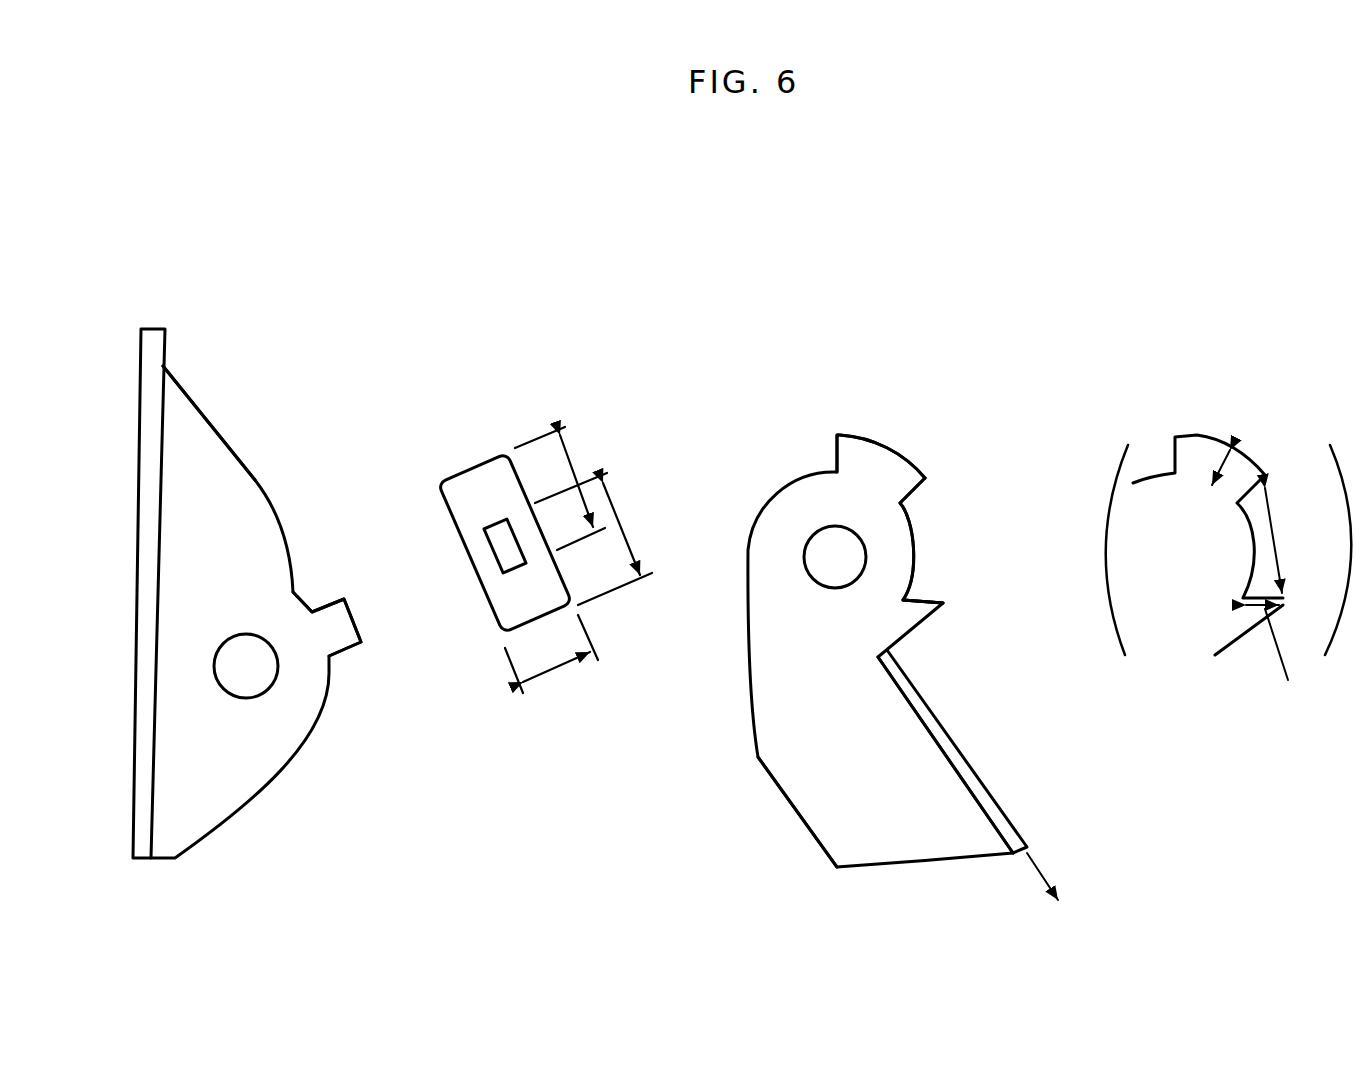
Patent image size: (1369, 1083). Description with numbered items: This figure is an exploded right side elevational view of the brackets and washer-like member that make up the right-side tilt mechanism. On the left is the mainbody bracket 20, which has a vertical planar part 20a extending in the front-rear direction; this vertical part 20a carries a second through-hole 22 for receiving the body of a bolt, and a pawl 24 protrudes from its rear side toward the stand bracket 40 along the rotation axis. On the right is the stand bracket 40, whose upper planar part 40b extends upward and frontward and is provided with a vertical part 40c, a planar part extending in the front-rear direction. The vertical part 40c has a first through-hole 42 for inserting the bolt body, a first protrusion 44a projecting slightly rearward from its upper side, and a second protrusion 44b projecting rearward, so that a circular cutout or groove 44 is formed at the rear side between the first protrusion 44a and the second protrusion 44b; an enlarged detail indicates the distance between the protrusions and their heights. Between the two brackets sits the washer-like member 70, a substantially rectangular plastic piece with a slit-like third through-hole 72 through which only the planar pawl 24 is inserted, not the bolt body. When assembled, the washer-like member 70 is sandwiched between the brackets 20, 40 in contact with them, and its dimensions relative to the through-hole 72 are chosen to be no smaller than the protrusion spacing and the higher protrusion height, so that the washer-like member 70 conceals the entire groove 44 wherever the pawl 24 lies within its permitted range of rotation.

The mainbody bracket 20 is at (189, 264).
The vertical planar part 20a is at (205, 445).
The second through-hole 22 is at (255, 695).
The pawl 24 is at (353, 612).
The stand bracket 40 is at (878, 371).
The upper planar part 40b is at (1014, 802).
The vertical part 40c is at (853, 805).
The first through-hole 42 is at (815, 585).
The groove 44 is at (929, 526).
The first protrusion 44a is at (895, 448).
The second protrusion 44b is at (943, 603).
The washer-like member 70 is at (501, 425).
The third through-hole 72 is at (500, 555).